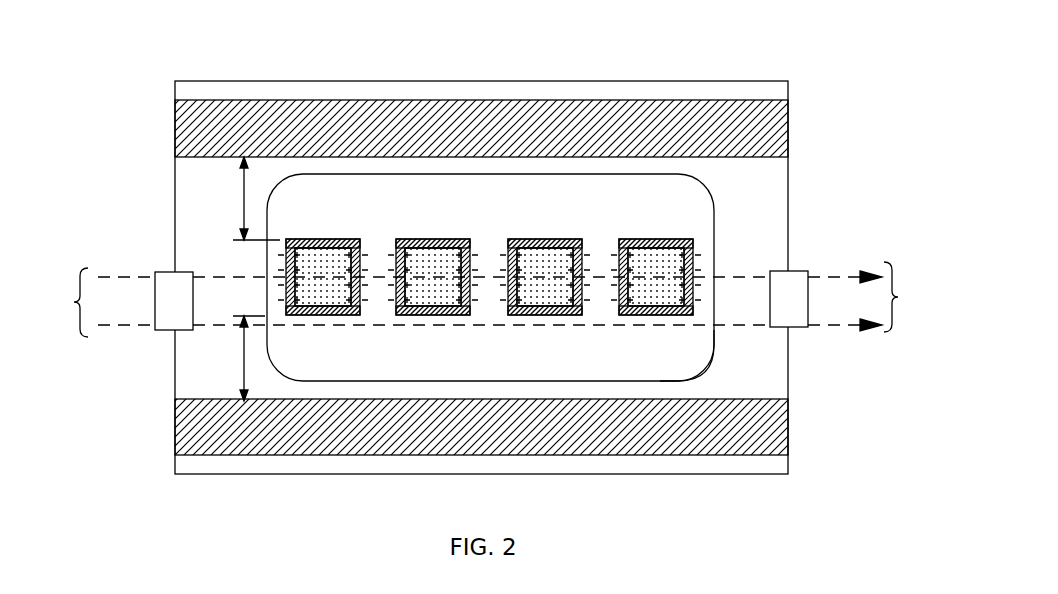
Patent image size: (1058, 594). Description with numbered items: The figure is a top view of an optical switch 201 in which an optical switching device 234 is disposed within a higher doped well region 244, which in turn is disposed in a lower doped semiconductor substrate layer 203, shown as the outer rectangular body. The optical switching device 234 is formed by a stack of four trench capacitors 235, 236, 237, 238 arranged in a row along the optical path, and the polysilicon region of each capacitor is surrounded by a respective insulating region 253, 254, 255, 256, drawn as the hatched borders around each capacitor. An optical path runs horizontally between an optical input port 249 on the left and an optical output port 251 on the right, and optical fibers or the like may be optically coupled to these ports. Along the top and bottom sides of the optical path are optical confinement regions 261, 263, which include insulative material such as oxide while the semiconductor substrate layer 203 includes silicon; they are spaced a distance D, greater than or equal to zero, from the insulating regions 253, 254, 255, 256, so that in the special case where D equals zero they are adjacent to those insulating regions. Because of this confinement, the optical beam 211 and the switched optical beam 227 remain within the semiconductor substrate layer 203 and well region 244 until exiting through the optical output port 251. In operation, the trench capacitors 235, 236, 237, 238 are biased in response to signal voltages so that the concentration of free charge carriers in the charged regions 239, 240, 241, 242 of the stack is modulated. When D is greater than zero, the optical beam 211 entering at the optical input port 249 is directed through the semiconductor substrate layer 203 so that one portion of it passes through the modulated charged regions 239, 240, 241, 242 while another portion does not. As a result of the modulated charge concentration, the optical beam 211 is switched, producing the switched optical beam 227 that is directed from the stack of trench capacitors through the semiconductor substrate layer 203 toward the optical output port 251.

The optical switch 201 is at (707, 51).
The semiconductor substrate layer 203 is at (788, 208).
The optical confinement region 261 is at (788, 132).
The optical confinement region 263 is at (788, 428).
The optical switching device 234 is at (696, 231).
The higher doped well region 244 is at (705, 368).
The trench capacitor 235 is at (320, 239).
The trench capacitor 236 is at (430, 239).
The trench capacitor 237 is at (542, 239).
The trench capacitor 238 is at (653, 239).
The insulating region 253 is at (336, 239).
The insulating region 254 is at (446, 239).
The insulating region 255 is at (558, 239).
The insulating region 256 is at (669, 239).
The charged region 239 is at (283, 318).
The charged region 240 is at (393, 318).
The charged region 241 is at (505, 318).
The charged region 242 is at (616, 318).
The optical beam 211 is at (95, 302).
The switched optical beam 227 is at (876, 297).
The optical input port 249 is at (165, 272).
The optical output port 251 is at (790, 271).